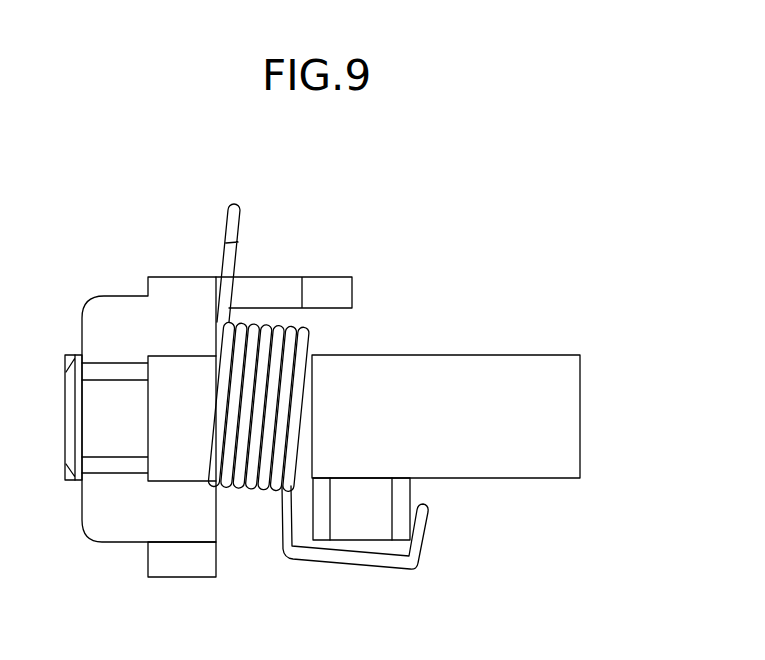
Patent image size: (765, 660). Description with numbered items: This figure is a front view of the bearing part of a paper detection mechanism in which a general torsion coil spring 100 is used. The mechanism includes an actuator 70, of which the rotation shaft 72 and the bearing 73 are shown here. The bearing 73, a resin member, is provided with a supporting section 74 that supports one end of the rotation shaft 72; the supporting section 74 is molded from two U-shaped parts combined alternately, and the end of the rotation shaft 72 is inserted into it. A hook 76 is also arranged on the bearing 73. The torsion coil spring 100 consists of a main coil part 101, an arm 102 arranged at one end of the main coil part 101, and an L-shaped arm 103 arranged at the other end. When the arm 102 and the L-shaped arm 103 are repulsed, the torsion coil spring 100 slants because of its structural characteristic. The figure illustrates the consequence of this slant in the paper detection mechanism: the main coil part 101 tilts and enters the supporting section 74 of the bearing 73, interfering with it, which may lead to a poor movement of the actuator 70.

The actuator 70 is at (399, 304).
The rotation shaft 72 is at (445, 385).
The bearing 73 is at (99, 548).
The supporting section 74 is at (178, 485).
The hook 76 is at (327, 292).
The torsion coil spring 100 is at (258, 398).
The main coil part 101 is at (267, 330).
The arm 102 is at (227, 227).
The L-shaped arm 103 is at (377, 567).